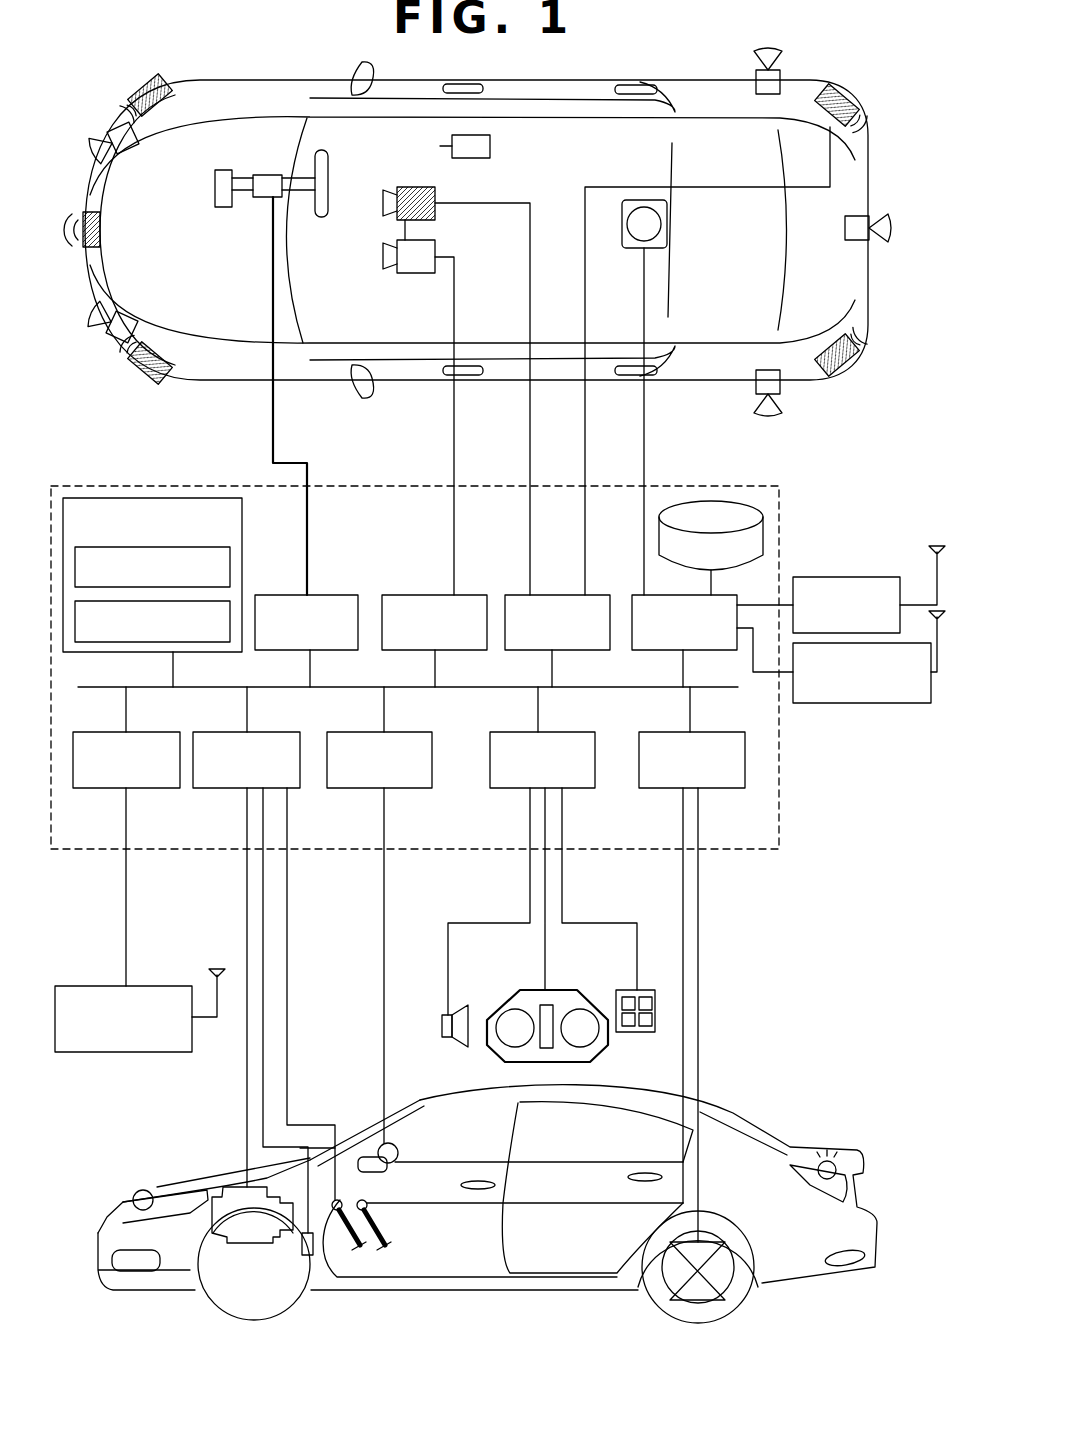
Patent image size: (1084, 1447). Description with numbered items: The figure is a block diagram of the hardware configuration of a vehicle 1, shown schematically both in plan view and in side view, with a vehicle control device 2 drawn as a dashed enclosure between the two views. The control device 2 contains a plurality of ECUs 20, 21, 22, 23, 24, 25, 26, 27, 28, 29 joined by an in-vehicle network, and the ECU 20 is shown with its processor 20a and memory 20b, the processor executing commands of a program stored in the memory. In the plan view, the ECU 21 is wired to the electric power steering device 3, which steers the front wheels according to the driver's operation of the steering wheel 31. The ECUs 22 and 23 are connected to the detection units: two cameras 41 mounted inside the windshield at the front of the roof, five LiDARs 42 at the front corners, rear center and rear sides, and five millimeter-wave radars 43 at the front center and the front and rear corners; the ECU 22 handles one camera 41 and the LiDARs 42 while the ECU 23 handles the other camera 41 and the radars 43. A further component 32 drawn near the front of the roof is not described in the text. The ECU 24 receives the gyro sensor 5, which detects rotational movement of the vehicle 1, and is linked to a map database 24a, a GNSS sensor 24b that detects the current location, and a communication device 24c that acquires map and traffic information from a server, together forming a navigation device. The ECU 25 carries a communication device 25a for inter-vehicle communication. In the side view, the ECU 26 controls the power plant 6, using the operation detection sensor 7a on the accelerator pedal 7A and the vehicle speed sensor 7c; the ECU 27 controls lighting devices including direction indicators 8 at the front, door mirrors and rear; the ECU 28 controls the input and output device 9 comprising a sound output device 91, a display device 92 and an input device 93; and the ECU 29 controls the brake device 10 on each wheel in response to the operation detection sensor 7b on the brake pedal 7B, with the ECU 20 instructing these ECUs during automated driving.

The vehicle 1 is at (875, 141).
The vehicle control device 2 is at (763, 855).
The electric power steering device 3 is at (223, 207).
The gyro sensor 5 is at (668, 224).
The power plant 6 is at (218, 1180).
The operation detection sensor 7a is at (358, 1140).
The operation detection sensor 7b is at (355, 1202).
The vehicle speed sensor 7c is at (305, 1258).
The accelerator pedal 7A is at (365, 1250).
The brake pedal 7B is at (390, 1232).
The direction indicator 8 is at (133, 1195).
The input and output device 9 is at (535, 1037).
The brake device 10 is at (705, 1295).
The ECU 20 is at (93, 497).
The processor 20a is at (215, 547).
The memory 20b is at (222, 600).
The ECU 21 is at (332, 594).
The ECU 22 is at (420, 594).
The ECU 23 is at (553, 594).
The ECU 24 is at (633, 595).
The map database 24a is at (700, 500).
The GNSS sensor 24b is at (873, 577).
The communication device 24c is at (870, 703).
The ECU 25 is at (152, 788).
The communication device 25a is at (125, 1052).
The ECU 26 is at (215, 788).
The ECU 27 is at (408, 788).
The ECU 28 is at (577, 788).
The ECU 29 is at (707, 788).
The steering wheel 31 is at (320, 217).
The camera / sensor 32 is at (490, 150).
The camera 41 is at (440, 187).
The LiDAR 42 is at (132, 155).
The millimeter-wave radar 43 is at (175, 75).
The sound output device 91 is at (442, 1025).
The display device 92 is at (502, 1005).
The input device 93 is at (640, 1032).